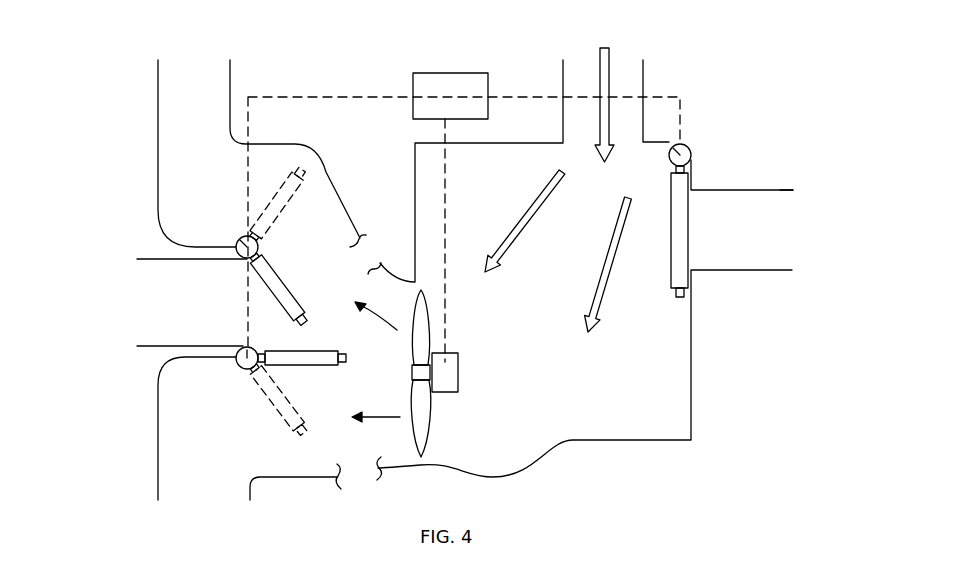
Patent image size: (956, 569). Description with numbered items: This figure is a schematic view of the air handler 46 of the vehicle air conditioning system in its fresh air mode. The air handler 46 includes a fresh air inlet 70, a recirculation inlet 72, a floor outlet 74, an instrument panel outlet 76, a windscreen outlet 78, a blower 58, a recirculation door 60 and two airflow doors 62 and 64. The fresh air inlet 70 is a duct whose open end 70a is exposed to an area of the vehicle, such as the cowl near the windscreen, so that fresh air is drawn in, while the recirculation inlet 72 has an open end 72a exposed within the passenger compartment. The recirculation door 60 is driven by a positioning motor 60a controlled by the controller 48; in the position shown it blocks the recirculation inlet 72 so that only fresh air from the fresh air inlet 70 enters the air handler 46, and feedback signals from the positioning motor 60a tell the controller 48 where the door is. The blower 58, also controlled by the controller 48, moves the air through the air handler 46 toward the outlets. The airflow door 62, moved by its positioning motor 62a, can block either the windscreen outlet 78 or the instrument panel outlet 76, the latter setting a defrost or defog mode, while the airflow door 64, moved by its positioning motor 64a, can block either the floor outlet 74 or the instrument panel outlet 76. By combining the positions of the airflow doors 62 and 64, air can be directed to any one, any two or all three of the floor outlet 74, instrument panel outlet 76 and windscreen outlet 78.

The air handler 46 is at (686, 69).
The controller 48 is at (426, 73).
The blower 58 is at (447, 392).
The recirculation door 60 is at (671, 268).
The positioning motor 60a is at (683, 152).
The airflow door 62 is at (286, 282).
The positioning motor 62a is at (240, 240).
The airflow door 64 is at (312, 366).
The positioning motor 64a is at (243, 367).
The fresh air inlet 70 is at (643, 117).
The open end 70a is at (642, 73).
The recirculation inlet 72 is at (713, 190).
The open end 72a is at (793, 192).
The floor outlet 74 is at (157, 447).
The instrument panel outlet 76 is at (160, 258).
The windscreen outlet 78 is at (232, 80).